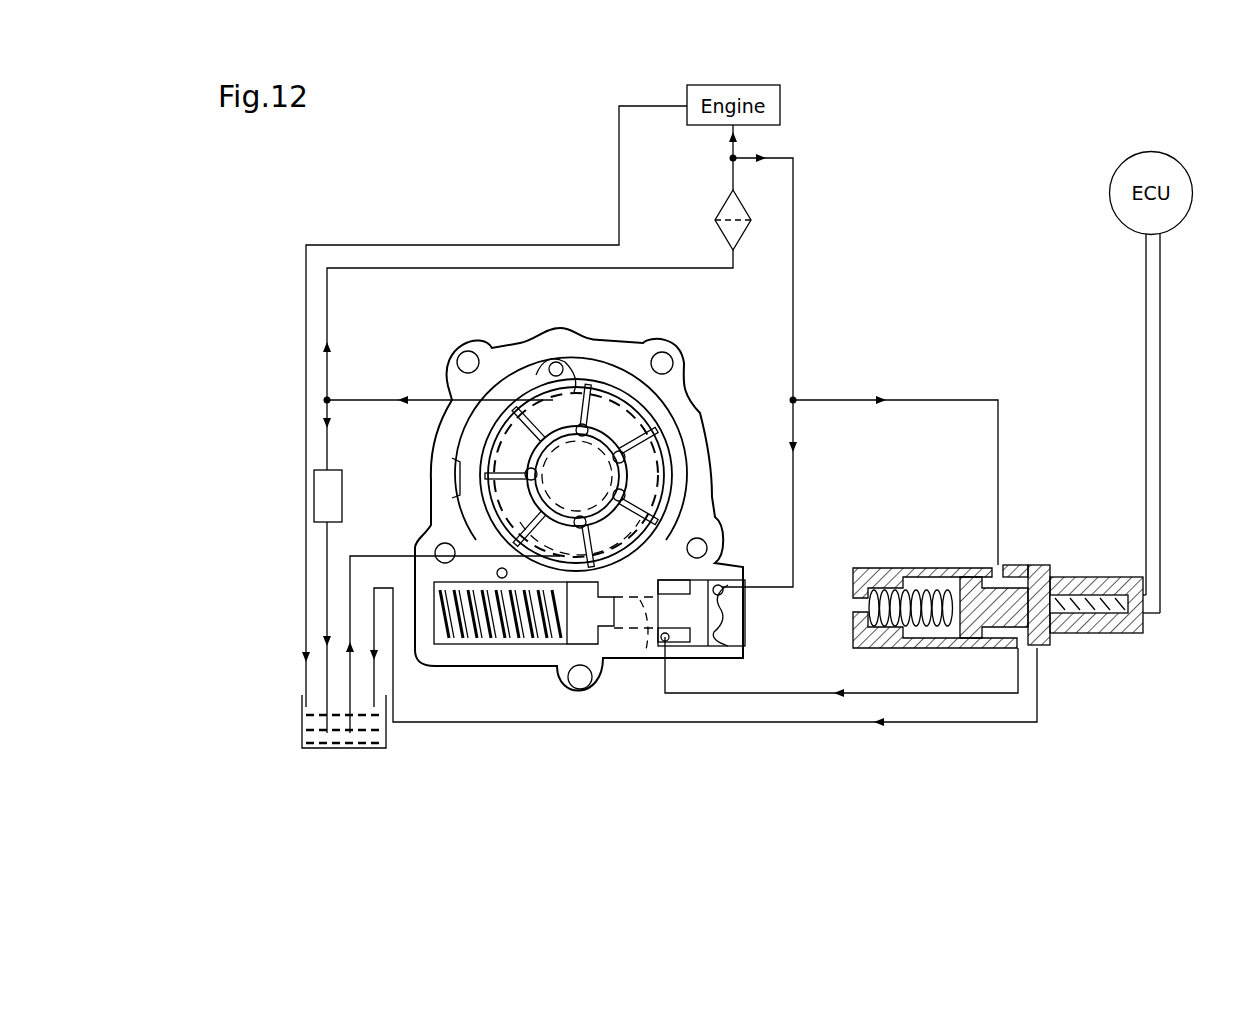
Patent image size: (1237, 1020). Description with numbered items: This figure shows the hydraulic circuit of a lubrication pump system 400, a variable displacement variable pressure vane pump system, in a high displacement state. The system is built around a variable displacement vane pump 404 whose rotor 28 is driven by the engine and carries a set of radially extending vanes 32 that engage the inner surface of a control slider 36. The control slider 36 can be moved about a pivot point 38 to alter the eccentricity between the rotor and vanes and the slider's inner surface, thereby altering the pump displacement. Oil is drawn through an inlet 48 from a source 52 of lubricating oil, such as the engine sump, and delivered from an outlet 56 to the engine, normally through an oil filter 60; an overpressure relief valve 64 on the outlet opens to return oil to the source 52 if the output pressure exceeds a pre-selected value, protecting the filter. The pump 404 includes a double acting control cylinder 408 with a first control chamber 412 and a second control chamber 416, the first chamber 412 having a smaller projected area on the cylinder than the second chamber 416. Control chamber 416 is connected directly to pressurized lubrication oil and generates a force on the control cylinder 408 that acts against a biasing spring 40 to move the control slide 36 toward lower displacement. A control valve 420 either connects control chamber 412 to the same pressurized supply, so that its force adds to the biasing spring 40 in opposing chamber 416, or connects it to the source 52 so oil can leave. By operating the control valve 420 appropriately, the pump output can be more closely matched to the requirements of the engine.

The lubrication pump system 400 is at (396, 198).
The rotor 28 is at (625, 456).
The vanes 32 is at (640, 500).
The control slider 36 is at (608, 385).
The pivot point 38 is at (578, 368).
The biasing spring 40 is at (512, 632).
The inlet 48 is at (632, 540).
The source 52 is at (302, 724).
The outlet 56 is at (553, 374).
The oil filter 60 is at (719, 220).
The overpressure relief valve 64 is at (343, 476).
The variable displacement vane pump 404 is at (687, 398).
The double acting control cylinder 408 is at (657, 655).
The first control chamber 412 is at (690, 642).
The second control chamber 416 is at (717, 637).
The control valve 420 is at (1028, 562).